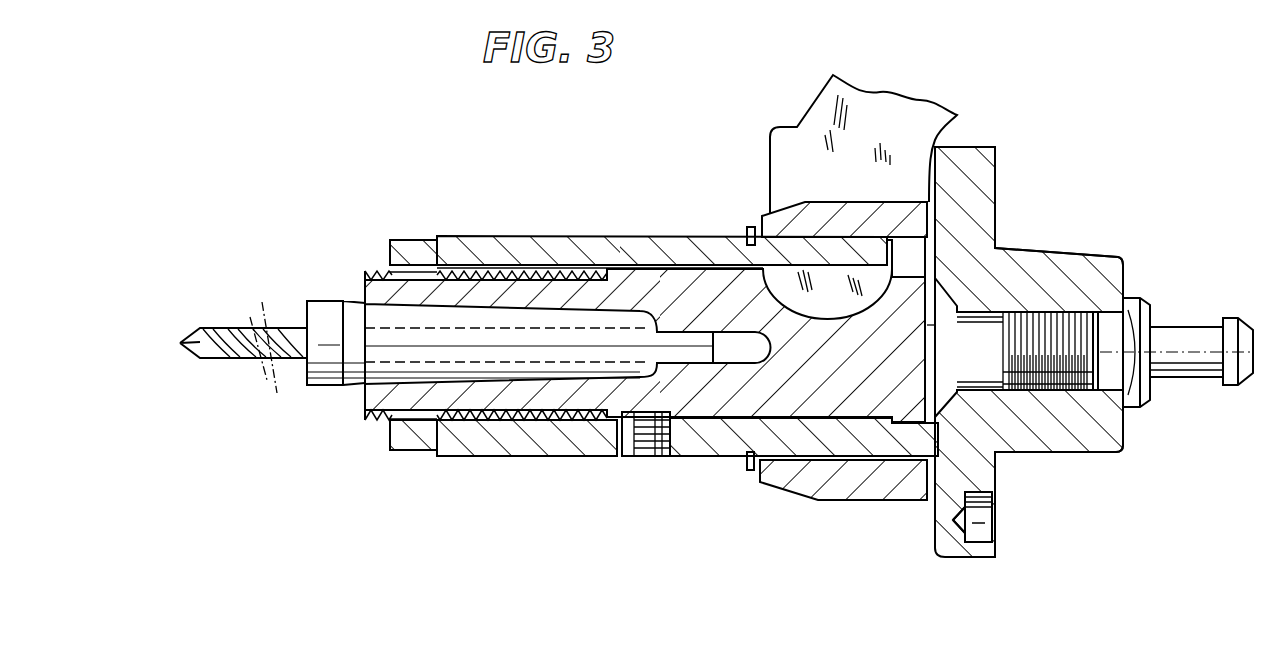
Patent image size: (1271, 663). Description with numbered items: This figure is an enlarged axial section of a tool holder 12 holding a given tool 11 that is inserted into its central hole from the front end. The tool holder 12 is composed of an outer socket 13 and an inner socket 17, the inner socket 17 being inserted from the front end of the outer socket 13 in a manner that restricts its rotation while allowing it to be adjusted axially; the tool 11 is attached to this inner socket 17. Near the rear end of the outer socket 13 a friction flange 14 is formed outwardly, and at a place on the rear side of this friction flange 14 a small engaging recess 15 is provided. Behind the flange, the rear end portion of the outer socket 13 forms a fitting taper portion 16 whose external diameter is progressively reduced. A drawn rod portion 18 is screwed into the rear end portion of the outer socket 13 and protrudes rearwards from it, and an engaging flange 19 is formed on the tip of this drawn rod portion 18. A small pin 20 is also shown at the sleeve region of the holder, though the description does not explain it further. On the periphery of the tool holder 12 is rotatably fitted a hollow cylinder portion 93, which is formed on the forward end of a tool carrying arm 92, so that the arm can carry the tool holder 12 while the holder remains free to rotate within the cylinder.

The tool 11 is at (250, 322).
The tool holder 12 is at (507, 228).
The outer socket 13 is at (550, 458).
The friction flange 14 is at (980, 177).
The engaging recess 15 is at (985, 523).
The fitting taper portion 16 is at (1077, 253).
The inner socket 17 is at (670, 295).
The drawn rod portion 18 is at (1189, 336).
The engaging flange 19 is at (1228, 388).
The locking pin 20 is at (746, 470).
The tool carrying arm 92 is at (886, 115).
The hollow cylinder portion 93 is at (816, 222).